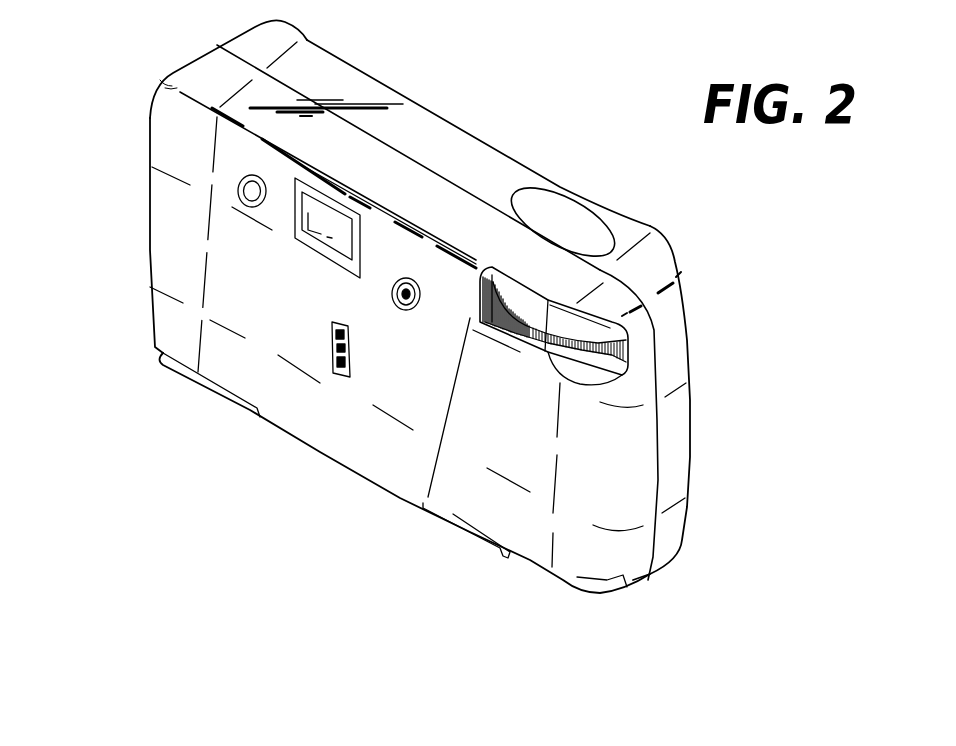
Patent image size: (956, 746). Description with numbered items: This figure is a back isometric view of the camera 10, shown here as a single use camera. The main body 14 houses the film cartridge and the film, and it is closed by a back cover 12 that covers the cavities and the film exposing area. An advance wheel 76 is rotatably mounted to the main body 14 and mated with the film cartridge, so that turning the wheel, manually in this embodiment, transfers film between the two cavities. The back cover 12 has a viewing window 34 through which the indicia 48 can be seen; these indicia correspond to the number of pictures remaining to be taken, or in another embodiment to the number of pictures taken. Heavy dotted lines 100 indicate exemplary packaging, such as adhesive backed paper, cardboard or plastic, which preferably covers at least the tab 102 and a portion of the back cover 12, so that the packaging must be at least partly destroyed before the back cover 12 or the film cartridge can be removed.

The camera 10 is at (155, 48).
The back cover 12 is at (152, 134).
The main body 14 is at (477, 138).
The viewing window 34 is at (341, 380).
The indicia 48 is at (333, 372).
The advance wheel 76 is at (565, 368).
The heavy dotted lines 100 is at (683, 383).
The tab 102 is at (510, 553).